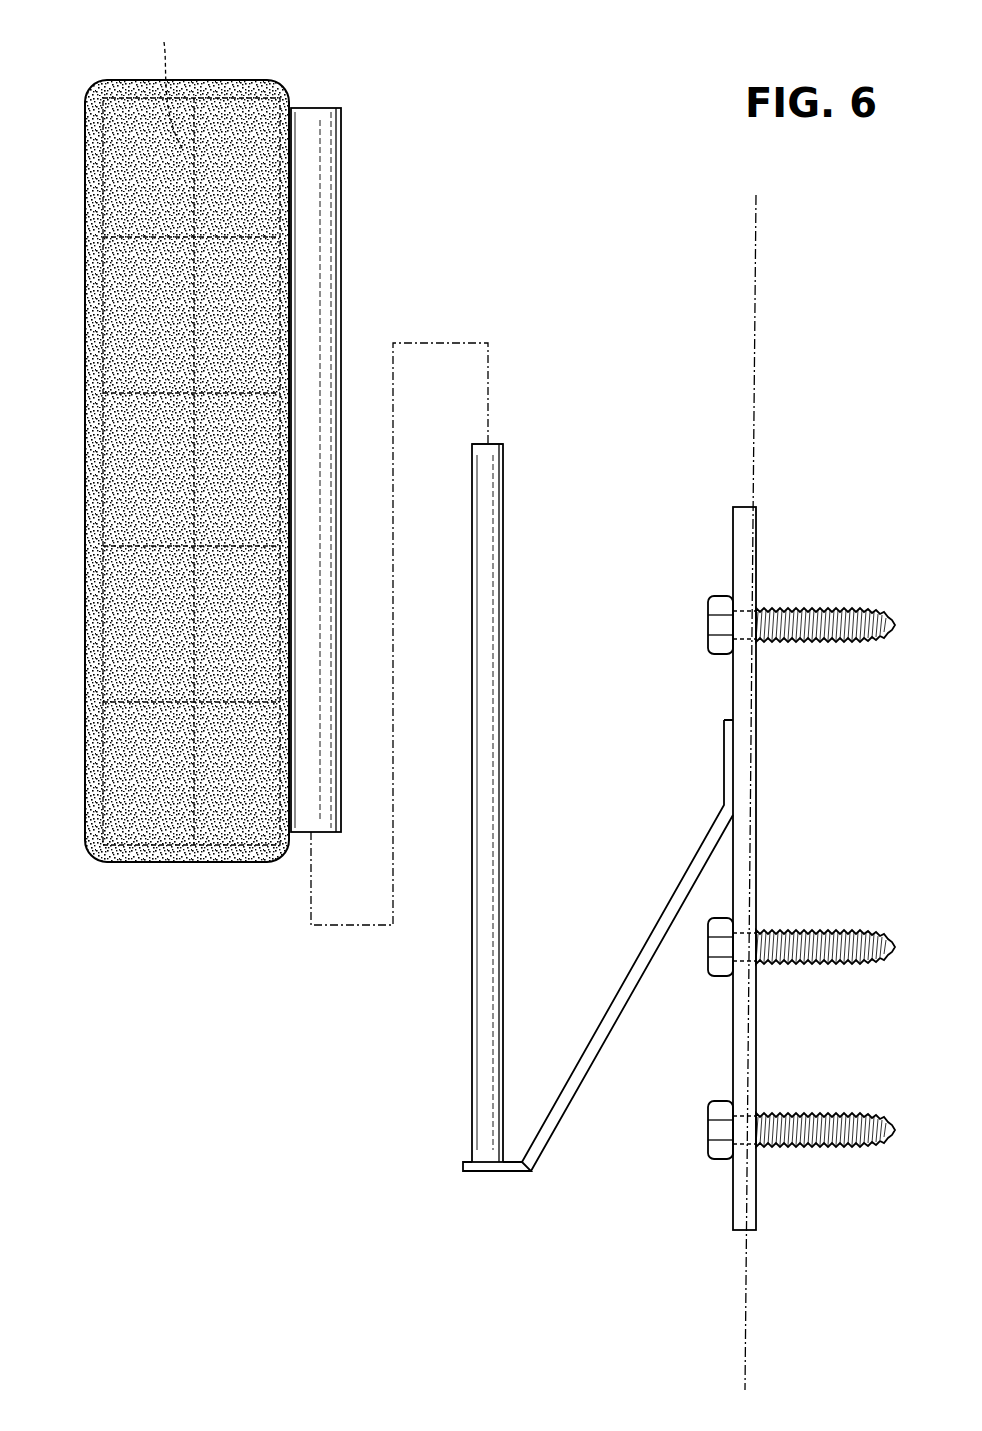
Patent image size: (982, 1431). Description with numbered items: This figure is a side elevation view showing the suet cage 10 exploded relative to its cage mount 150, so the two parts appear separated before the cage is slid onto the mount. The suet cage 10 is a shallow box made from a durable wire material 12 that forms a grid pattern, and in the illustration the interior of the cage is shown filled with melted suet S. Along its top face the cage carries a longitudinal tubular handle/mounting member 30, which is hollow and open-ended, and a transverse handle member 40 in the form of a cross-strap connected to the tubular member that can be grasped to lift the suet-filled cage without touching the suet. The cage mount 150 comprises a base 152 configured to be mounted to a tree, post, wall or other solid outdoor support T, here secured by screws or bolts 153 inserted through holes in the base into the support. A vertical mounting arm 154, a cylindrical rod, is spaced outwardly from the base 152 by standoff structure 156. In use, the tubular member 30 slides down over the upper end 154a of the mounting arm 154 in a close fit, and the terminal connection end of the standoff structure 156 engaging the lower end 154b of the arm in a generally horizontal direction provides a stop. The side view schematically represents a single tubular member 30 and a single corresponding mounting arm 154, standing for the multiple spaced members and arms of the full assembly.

The melted suet S is at (128, 185).
The suet cage 10 is at (330, 80).
The wire material 12 is at (164, 86).
The tubular handle/mounting member 30 is at (313, 257).
The transverse handle member 40 is at (342, 208).
The cage mount 150 is at (627, 608).
The base 152 is at (748, 777).
The screws or bolts 153 is at (840, 930).
The vertical mounting arm 154 is at (492, 702).
The upper end of mounting arm 154a is at (497, 443).
The lower end of mounting arm 154b is at (492, 1170).
The standoff structure 156 is at (622, 990).
The outdoor support T is at (760, 378).